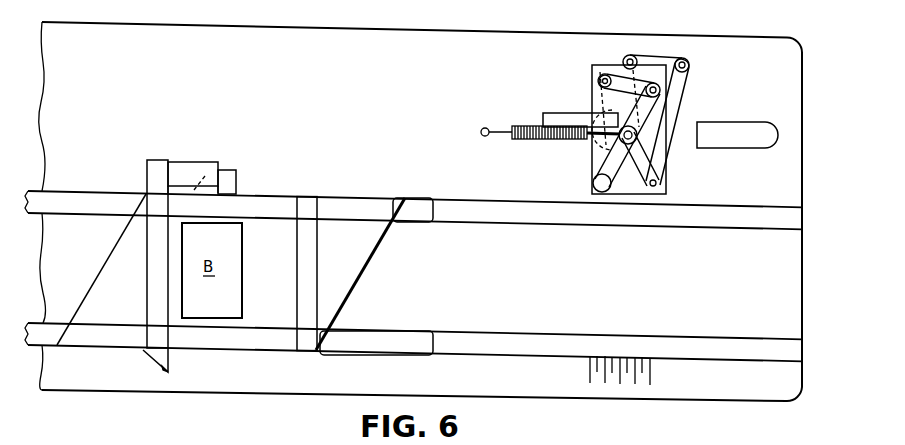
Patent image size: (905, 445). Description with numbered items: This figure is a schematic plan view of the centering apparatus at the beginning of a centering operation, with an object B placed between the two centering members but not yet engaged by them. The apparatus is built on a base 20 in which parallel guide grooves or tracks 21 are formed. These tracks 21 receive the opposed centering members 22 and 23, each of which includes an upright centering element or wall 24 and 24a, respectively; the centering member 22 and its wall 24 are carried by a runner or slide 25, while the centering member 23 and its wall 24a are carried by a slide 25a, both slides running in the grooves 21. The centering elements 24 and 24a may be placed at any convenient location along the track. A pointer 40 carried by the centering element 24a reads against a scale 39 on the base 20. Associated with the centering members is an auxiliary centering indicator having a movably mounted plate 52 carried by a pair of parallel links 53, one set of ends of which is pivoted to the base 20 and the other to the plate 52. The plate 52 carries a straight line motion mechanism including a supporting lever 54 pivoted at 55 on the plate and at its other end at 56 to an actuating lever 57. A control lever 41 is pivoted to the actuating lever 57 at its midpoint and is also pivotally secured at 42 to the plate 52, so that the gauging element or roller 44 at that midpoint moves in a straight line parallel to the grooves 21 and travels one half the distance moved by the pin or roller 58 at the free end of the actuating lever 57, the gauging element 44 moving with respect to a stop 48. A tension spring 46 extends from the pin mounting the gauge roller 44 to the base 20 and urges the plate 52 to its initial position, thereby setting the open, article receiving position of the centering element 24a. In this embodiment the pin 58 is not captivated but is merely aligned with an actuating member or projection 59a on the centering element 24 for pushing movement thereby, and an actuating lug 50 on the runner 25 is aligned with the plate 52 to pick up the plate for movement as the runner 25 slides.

The base 20 is at (581, 286).
The guide grooves or tracks 21 is at (747, 225).
The centering member 22 is at (338, 300).
The centering member 23 is at (104, 272).
The centering element or wall 24 is at (312, 269).
The centering element or wall 24a is at (148, 292).
The runner or slide 25 is at (422, 222).
The slide 25a is at (426, 331).
The scale 39 is at (650, 362).
The pointer 40 is at (170, 360).
The control lever 41 is at (665, 155).
The pivot 42 is at (658, 183).
The gauging element or roller 44 is at (640, 128).
The tension spring 46 is at (531, 140).
The stop 48 is at (738, 128).
The actuating lug 50 is at (233, 171).
The movably mounted plate 52 is at (596, 100).
The parallel links 53 is at (681, 56).
The supporting lever 54 is at (606, 71).
The pivot 55 is at (598, 78).
The pivot 56 is at (662, 90).
The actuating lever 57 is at (643, 78).
The pin or roller 58 is at (594, 183).
The actuating member or projection 59a is at (202, 171).